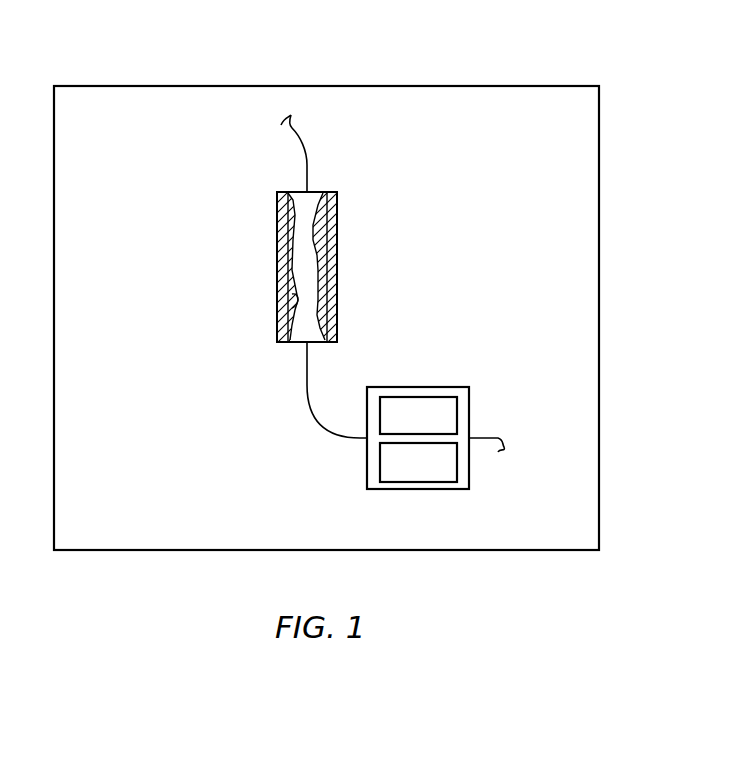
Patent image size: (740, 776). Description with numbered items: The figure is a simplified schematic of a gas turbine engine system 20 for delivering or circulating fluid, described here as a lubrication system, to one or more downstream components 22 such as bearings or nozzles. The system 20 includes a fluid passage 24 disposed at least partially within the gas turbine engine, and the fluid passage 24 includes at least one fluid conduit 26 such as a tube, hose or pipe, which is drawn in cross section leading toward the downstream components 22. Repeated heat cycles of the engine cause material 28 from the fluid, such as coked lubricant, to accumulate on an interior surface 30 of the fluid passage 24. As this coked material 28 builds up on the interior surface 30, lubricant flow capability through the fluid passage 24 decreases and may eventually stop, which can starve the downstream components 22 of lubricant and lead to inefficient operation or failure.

The gas turbine engine system 20 is at (486, 86).
The downstream component 22 is at (431, 426).
The fluid passage 24 is at (306, 150).
The fluid conduit 26 is at (338, 213).
The material 28 is at (291, 281).
The interior surface 30 is at (289, 303).